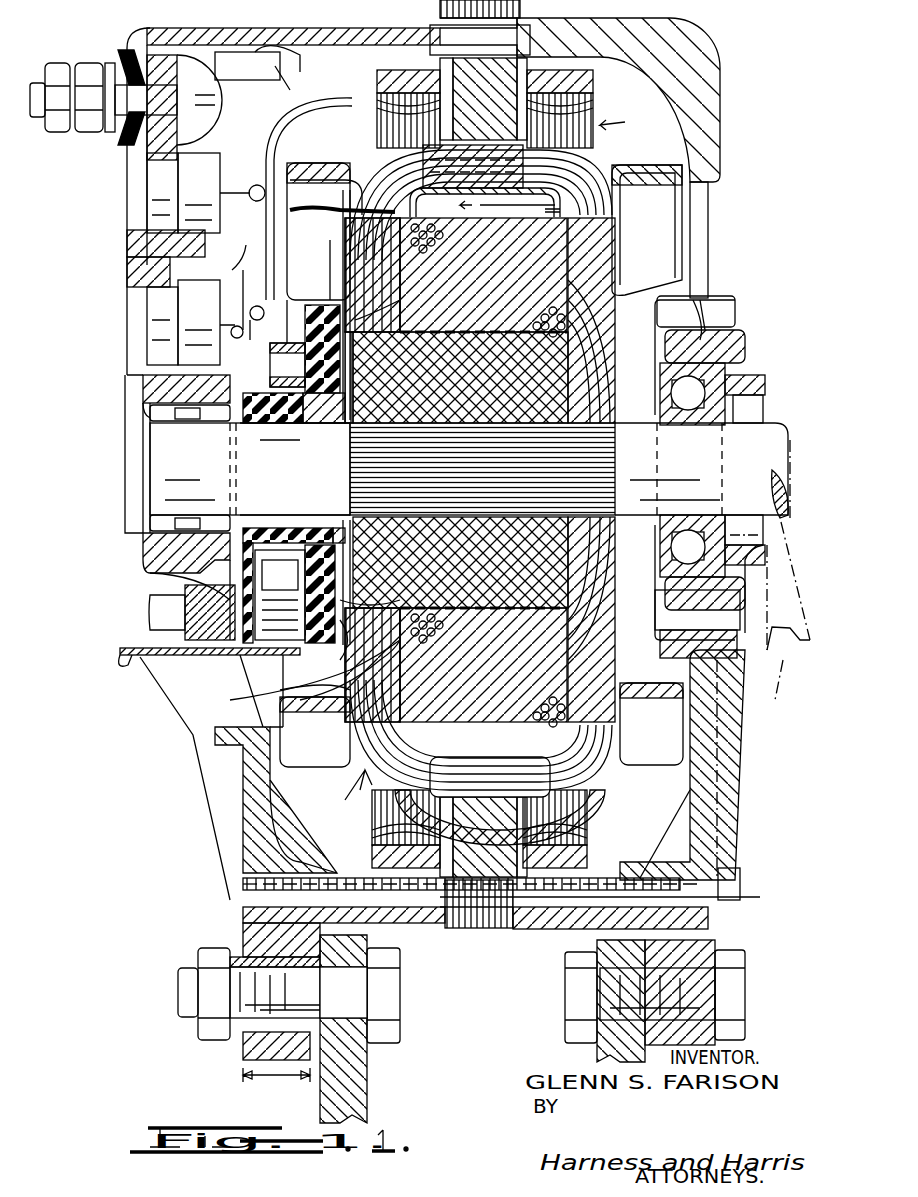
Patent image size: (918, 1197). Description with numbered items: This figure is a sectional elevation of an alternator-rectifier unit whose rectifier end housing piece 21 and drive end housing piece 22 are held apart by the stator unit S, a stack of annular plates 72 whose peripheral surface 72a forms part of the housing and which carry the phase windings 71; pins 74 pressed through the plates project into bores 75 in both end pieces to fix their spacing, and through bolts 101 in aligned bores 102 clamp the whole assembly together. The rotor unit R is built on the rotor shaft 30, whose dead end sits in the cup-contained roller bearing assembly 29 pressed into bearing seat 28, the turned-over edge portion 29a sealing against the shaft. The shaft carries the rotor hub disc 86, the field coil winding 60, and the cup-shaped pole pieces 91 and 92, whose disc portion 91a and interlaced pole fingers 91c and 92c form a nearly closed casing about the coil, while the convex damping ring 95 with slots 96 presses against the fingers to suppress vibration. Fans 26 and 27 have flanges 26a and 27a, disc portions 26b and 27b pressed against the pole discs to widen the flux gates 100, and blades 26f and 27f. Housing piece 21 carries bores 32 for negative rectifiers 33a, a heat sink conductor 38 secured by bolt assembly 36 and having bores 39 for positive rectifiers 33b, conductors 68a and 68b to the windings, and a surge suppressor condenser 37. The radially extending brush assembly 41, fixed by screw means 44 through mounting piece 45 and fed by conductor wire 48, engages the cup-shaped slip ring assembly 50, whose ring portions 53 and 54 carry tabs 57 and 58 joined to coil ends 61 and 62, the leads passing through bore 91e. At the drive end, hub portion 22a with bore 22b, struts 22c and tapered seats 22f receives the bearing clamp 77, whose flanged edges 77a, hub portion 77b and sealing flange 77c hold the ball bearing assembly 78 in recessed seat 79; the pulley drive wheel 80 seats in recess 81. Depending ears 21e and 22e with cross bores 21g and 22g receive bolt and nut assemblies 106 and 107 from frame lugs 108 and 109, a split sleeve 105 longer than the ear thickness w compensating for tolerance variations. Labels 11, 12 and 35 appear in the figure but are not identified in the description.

The rotor 11 is at (483, 181).
The brush holder 12 is at (325, 300).
The rectifier end housing piece 21 is at (175, 30).
The depending ear 21e is at (245, 1055).
The cross bore 21g is at (210, 1030).
The drive end housing piece 22 is at (705, 65).
The circular hub portion 22a is at (745, 378).
The bore 22b is at (748, 398).
The struts 22c is at (725, 318).
The depending ear 22e is at (700, 1035).
The tapered seat portion 22f is at (697, 456).
The cross bore 22g is at (745, 985).
The fan 26 is at (290, 760).
The flange portion 26a is at (330, 508).
The disc portion 26b is at (395, 305).
The fan blades 26f is at (312, 180).
The fan 27 is at (632, 772).
The flange portion 27a is at (648, 440).
The disc portion 27b is at (625, 258).
The fan blades 27f is at (668, 200).
The rotor shaft bearing seat 28 is at (150, 548).
The roller bearing assembly 29 is at (140, 452).
The edge portion of bearing cup 29a is at (228, 425).
The rotor shaft 30 is at (345, 500).
The bores 32 is at (135, 300).
The negative polarity rectifiers 33a is at (137, 333).
The positive polarity rectifiers 33b is at (158, 173).
The rotor hub 35 is at (462, 520).
The bolt assembly 36 is at (52, 68).
The surge suppressor condenser 37 is at (243, 56).
The heat sink conductor unit 38 is at (180, 150).
The bores 39 is at (135, 232).
The radially extending brush assembly 41 is at (260, 573).
The screw means 44 is at (150, 605).
The mounting pieces 45 is at (165, 655).
The conductor wire 48 is at (120, 660).
The slip ring assembly 50 is at (282, 425).
The slip ring portion 53 is at (275, 430).
The slip ring portion 54 is at (320, 352).
The wire connector tab 57 is at (200, 517).
The wire connector tab 58 is at (343, 260).
The rotor field coil winding 60 is at (408, 605).
The field coil end 61 is at (380, 598).
The field coil end 62 is at (345, 258).
The conductor 68a is at (242, 300).
The conductor 68b is at (270, 112).
The phase windings 71 is at (595, 92).
The annular stator plates 72 is at (490, 467).
The stator peripheral surface 72a is at (468, 930).
The pins 74 is at (520, 930).
The bores 75 is at (410, 930).
The bearing clamp 77 is at (720, 283).
The flanged outer edge portions 77a is at (735, 305).
The circular hub portion 77b is at (660, 300).
The axially extending flange portion 77c is at (585, 565).
The ball bearing assembly 78 is at (700, 628).
The recessed seat 79 is at (697, 610).
The pulley drive wheel 80 is at (780, 579).
The recess 81 is at (780, 512).
The rotor hub disc 86 is at (490, 612).
The rotor pole piece 91 is at (395, 382).
The annular disc portion 91a is at (355, 200).
The pole fingers 91c is at (380, 180).
The bore 91e is at (400, 655).
The rotor pole piece 92 is at (575, 380).
The pole fingers 92c is at (610, 185).
The sound damping ring 95 is at (500, 488).
The slots 96 is at (548, 212).
The magnetic flux gate locations 100 is at (320, 684).
The through bolts 101 is at (735, 872).
The aligned bores 102 is at (243, 882).
The split sleeve 105 is at (250, 960).
The mounting bolt and nut assembly 106 is at (395, 992).
The mounting bolt and nut assembly 107 is at (575, 1005).
The frame lug 108 is at (355, 1088).
The frame lug 109 is at (605, 1048).
The rotor unit R is at (348, 796).
The stator unit S is at (621, 120).
The thickness of housing ear w is at (276, 1074).